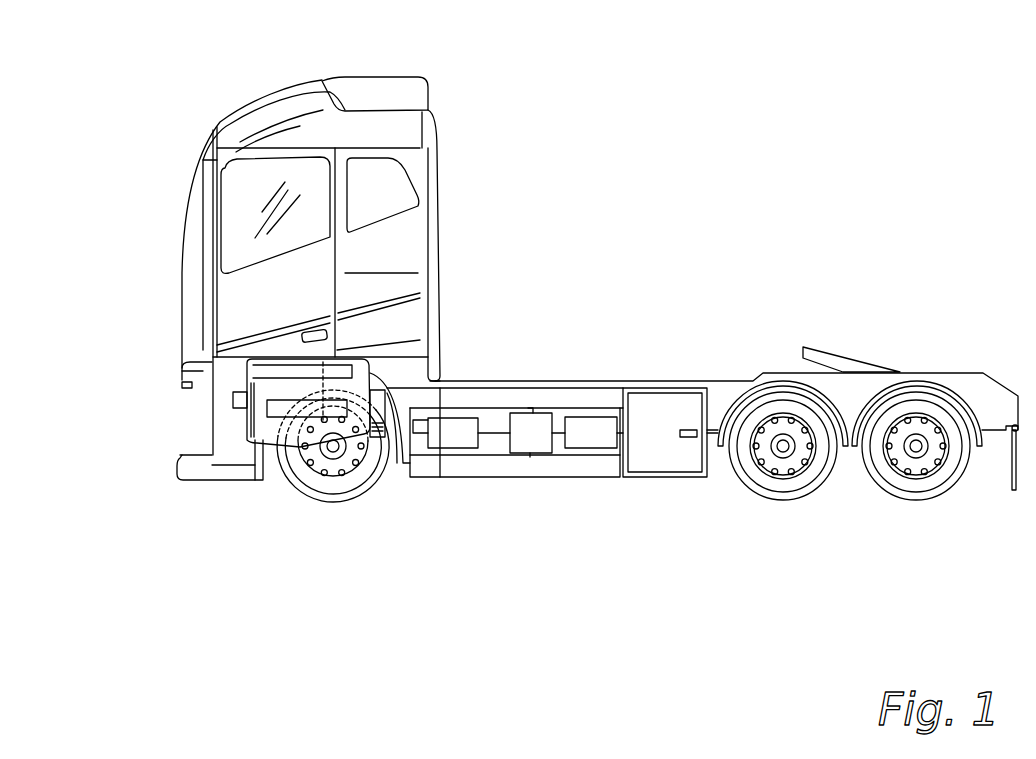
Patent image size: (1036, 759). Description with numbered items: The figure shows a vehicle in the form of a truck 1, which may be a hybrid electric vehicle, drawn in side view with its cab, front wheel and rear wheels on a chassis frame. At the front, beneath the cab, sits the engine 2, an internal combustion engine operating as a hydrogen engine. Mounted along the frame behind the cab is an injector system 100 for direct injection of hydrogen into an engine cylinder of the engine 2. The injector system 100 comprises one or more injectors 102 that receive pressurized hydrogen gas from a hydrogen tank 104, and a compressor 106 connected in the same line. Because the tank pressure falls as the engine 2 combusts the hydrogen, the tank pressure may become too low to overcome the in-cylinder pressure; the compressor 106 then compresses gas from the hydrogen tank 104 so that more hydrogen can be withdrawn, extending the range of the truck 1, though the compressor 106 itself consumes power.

The truck 1 is at (567, 296).
The engine 2 is at (268, 386).
The injector system 100 is at (702, 409).
The injectors 102 is at (462, 438).
The hydrogen tank 104 is at (538, 438).
The compressor 106 is at (591, 438).